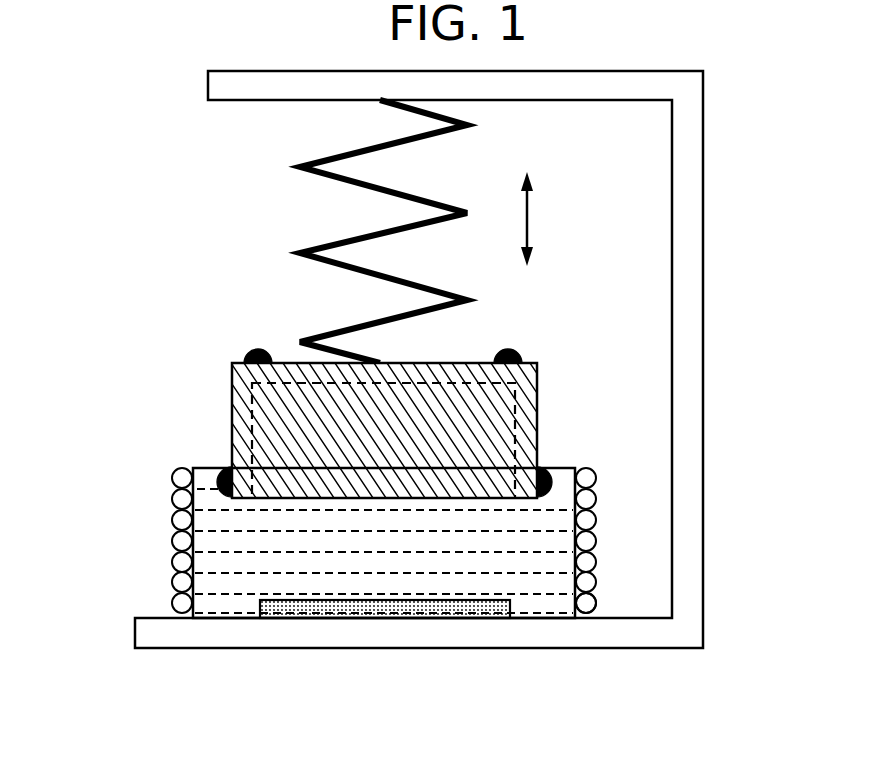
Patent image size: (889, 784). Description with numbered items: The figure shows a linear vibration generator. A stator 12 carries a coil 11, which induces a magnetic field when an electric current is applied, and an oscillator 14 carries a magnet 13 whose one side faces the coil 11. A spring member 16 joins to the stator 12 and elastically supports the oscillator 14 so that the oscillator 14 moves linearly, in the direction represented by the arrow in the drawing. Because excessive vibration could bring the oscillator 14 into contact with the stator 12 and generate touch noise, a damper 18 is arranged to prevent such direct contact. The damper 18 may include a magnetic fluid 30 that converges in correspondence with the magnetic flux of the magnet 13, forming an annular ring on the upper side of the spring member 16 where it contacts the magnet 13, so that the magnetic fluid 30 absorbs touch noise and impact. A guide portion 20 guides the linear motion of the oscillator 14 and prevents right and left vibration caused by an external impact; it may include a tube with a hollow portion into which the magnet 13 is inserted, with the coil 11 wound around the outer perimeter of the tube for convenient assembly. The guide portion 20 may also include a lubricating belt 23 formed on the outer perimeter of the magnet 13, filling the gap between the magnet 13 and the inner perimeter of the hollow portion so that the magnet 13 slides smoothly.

The coil 11 is at (182, 518).
The stator 12 is at (703, 196).
The magnet 13 is at (537, 420).
The oscillator 14 is at (537, 372).
The spring member 16 is at (323, 246).
The damper 18 is at (376, 612).
The guide portion 20 is at (580, 598).
The lubricating belt 23 is at (222, 470).
The magnetic fluid 30 is at (500, 352).